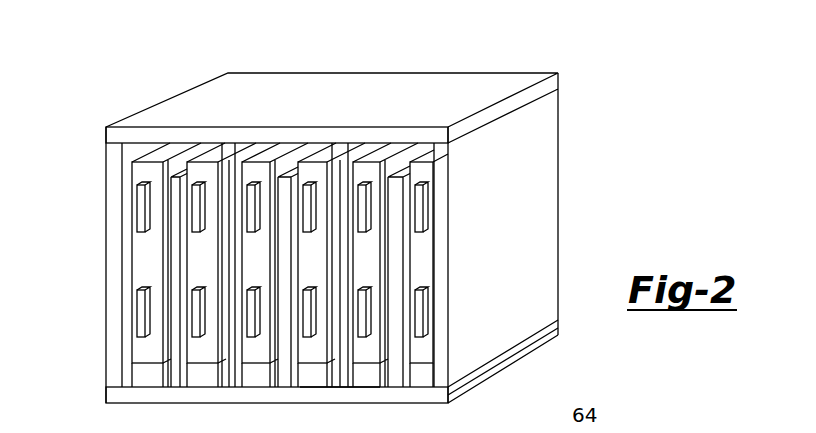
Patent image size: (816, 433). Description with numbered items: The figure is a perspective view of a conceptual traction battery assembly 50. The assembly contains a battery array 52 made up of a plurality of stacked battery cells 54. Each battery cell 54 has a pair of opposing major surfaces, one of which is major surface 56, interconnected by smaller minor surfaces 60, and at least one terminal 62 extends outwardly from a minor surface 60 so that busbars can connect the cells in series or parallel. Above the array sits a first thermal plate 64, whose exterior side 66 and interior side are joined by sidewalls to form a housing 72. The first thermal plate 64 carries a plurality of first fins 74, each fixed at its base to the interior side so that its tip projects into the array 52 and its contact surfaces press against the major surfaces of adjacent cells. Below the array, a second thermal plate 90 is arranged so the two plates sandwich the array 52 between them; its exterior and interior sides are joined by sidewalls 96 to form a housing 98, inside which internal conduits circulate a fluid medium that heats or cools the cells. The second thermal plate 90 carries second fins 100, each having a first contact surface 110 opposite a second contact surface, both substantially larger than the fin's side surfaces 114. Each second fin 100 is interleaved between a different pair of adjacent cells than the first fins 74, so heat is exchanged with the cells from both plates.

The traction battery assembly 50 is at (565, 41).
The battery array 52 is at (437, 275).
The battery cell 54 is at (437, 175).
The major surface 56 is at (394, 163).
The minor surface 60 is at (140, 349).
The terminal 62 is at (140, 201).
The first thermal plate 64 is at (158, 114).
The exterior side 66 is at (503, 85).
The housing 72 is at (351, 100).
The first fin 74 is at (228, 155).
The second thermal plate 90 is at (518, 351).
The sidewall 96 is at (373, 393).
The housing 98 is at (333, 397).
The second fin 100 is at (273, 366).
The first contact surface 110 is at (187, 372).
The side surface 114 is at (172, 370).